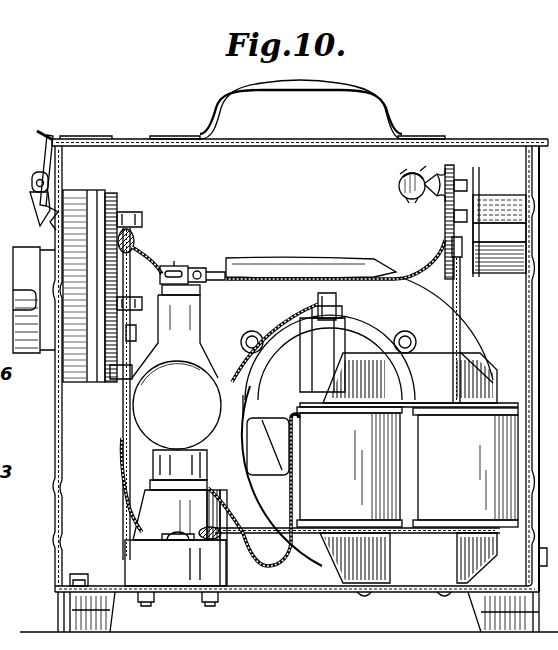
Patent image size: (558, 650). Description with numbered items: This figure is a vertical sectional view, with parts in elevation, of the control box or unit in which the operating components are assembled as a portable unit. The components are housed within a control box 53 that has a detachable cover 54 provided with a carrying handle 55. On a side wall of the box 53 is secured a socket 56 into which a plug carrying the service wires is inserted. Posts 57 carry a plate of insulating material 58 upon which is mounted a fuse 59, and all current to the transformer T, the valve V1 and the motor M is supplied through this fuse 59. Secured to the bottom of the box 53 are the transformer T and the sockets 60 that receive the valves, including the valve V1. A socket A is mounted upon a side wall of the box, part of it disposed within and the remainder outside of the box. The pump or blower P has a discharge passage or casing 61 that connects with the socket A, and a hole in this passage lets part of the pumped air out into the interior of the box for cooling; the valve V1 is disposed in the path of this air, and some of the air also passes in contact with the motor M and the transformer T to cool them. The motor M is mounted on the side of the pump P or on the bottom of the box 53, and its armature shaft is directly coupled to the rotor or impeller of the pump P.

The control box 53 is at (56, 408).
The detachable cover 54 is at (275, 139).
The carrying handle 55 is at (256, 88).
The socket 56 is at (490, 200).
The posts 57 is at (497, 240).
The plate of insulating material 58 is at (441, 205).
The fuse 59 is at (399, 183).
The sockets 60 is at (153, 512).
The discharge passage or casing 61 is at (205, 263).
The socket A is at (72, 252).
The pump or blower P is at (382, 264).
The motor M is at (365, 326).
The transformer T is at (443, 372).
The valve V1 is at (140, 405).